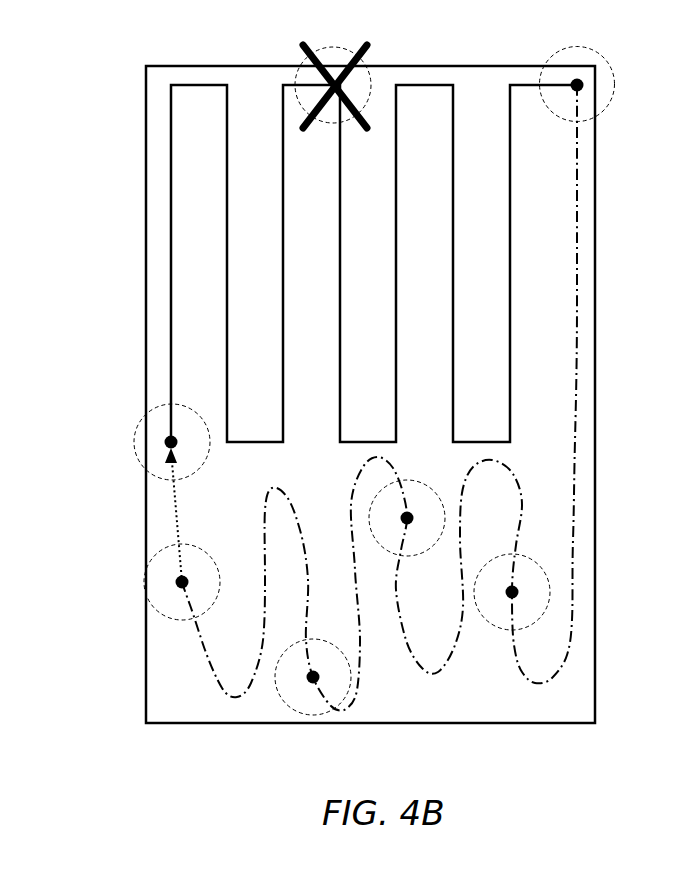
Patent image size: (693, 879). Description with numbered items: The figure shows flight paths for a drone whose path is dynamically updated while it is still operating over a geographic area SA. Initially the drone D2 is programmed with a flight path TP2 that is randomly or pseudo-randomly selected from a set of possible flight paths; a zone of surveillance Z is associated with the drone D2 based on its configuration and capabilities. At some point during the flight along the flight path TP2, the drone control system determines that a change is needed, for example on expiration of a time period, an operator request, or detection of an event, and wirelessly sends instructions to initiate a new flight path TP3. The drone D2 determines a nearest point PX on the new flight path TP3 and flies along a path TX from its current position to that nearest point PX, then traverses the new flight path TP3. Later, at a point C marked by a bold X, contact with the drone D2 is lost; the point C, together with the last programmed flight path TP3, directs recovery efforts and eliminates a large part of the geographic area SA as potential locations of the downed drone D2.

The geographic area SA is at (595, 568).
The new flight path TP3 is at (170, 217).
The flight path TP2 is at (580, 253).
The drone D2 is at (577, 85).
The zone of surveillance Z is at (610, 65).
The point C is at (335, 85).
The nearest point PX is at (170, 442).
The path TX is at (176, 503).